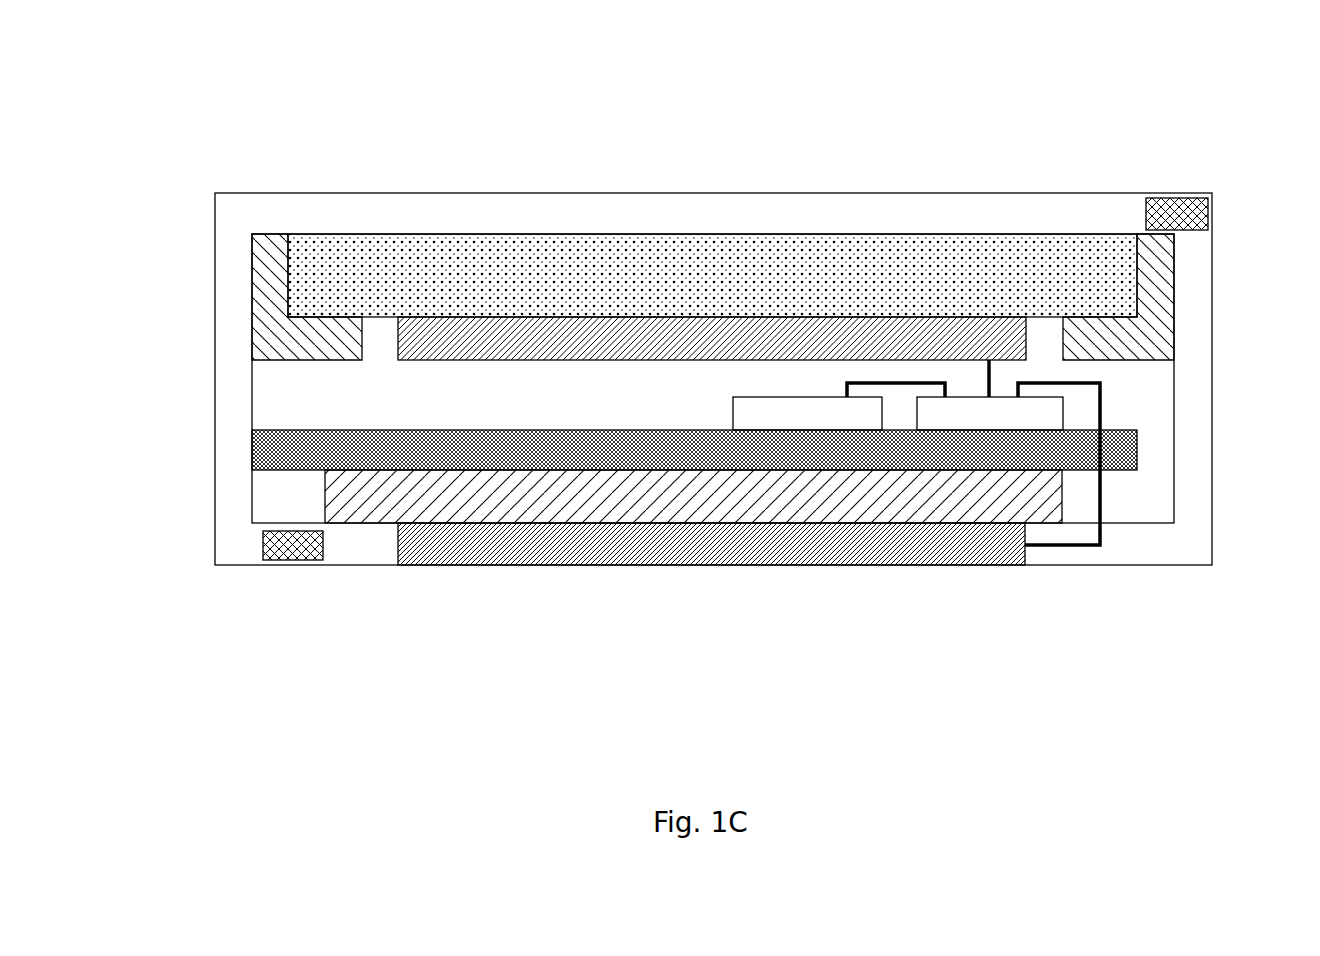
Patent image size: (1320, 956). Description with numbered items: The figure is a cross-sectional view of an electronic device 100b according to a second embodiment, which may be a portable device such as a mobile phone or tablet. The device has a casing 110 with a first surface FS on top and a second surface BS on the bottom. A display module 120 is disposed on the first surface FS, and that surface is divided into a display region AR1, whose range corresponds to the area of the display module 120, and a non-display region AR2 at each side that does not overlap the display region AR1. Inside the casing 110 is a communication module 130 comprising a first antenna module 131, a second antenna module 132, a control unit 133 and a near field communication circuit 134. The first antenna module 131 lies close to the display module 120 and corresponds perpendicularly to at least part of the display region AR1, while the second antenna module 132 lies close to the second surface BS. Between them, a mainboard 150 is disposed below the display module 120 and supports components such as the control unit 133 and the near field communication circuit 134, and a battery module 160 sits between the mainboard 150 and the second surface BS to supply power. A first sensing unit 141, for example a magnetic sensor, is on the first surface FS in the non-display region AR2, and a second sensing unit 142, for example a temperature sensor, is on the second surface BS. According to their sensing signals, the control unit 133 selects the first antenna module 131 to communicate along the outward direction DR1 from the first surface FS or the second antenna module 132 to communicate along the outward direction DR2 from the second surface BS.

The electronic device 100b is at (165, 71).
The casing 110 is at (228, 433).
The display module 120 is at (712, 275).
The communication module 130 is at (749, 497).
The first antenna module 131 is at (500, 617).
The second antenna module 132 is at (527, 635).
The control unit 133 is at (473, 600).
The near field communication circuit 134 is at (555, 643).
The first sensing unit 141 is at (1187, 214).
The second sensing unit 142 is at (293, 549).
The mainboard 150 is at (694, 450).
The battery module 160 is at (693, 496).
The first surface FS is at (398, 191).
The second surface BS is at (333, 567).
The display region AR1 is at (1135, 167).
The non-display region AR2 is at (286, 167).
The outward direction from first surface DR1 is at (915, 317).
The outward direction from second surface DR2 is at (864, 565).